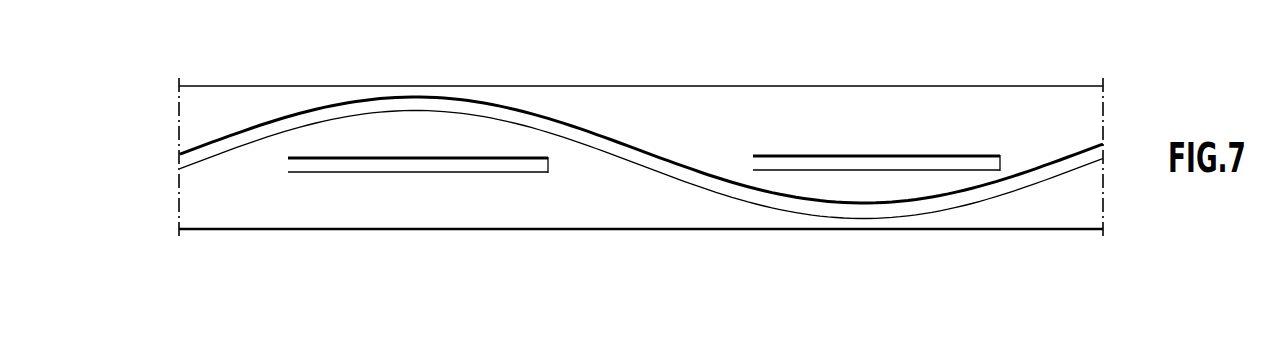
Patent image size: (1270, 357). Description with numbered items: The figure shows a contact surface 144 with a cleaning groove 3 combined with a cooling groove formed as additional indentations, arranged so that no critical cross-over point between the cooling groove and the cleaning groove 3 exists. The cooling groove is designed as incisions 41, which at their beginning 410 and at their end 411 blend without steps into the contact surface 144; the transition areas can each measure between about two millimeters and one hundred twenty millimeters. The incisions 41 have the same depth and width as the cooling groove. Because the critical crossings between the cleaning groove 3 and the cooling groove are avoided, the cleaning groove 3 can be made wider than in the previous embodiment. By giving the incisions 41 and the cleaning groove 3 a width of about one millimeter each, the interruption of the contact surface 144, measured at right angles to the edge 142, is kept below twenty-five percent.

The cleaning groove 3 is at (332, 108).
The incisions 41 is at (412, 164).
The edge 142 is at (238, 87).
The contact surface 144 is at (662, 116).
The beginning of incision 410 is at (294, 164).
The end of incision 411 is at (547, 158).